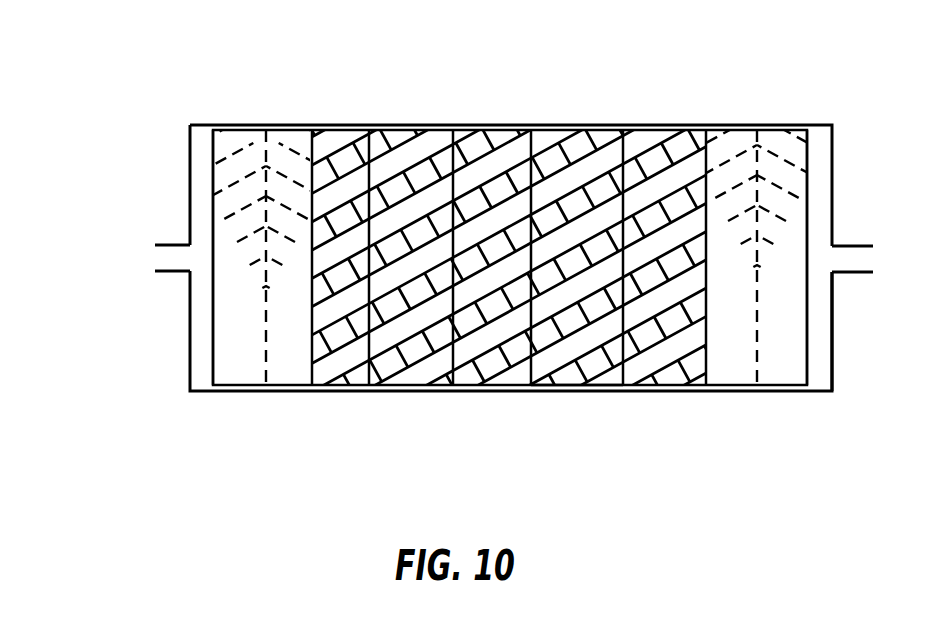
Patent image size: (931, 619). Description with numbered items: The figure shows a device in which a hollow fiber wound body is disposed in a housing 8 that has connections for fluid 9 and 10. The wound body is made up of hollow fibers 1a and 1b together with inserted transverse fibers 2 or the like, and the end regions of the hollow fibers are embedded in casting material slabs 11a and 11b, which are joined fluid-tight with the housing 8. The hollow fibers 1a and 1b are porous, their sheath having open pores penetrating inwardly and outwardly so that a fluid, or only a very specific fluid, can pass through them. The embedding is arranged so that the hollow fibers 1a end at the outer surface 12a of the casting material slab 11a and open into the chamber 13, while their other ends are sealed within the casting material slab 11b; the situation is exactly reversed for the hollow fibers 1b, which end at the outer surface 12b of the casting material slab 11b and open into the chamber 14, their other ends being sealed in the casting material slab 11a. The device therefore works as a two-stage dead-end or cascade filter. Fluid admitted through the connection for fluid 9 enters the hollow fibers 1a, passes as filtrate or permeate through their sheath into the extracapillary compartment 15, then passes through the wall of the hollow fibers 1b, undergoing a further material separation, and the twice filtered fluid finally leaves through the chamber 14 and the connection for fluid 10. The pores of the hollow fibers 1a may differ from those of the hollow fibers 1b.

The hollow fibers 1a is at (412, 152).
The hollow fibers 1b is at (595, 138).
The transverse fibers 2 is at (497, 128).
The housing 8 is at (337, 126).
The connection for fluid 9 is at (175, 260).
The connection for fluid 10 is at (845, 258).
The casting material slab 11a is at (248, 158).
The casting material slab 11b is at (775, 185).
The outer surface 12a is at (212, 178).
The outer surface 12b is at (810, 160).
The chamber 13 is at (202, 343).
The chamber 14 is at (818, 337).
The extracapillary compartment 15 is at (573, 373).